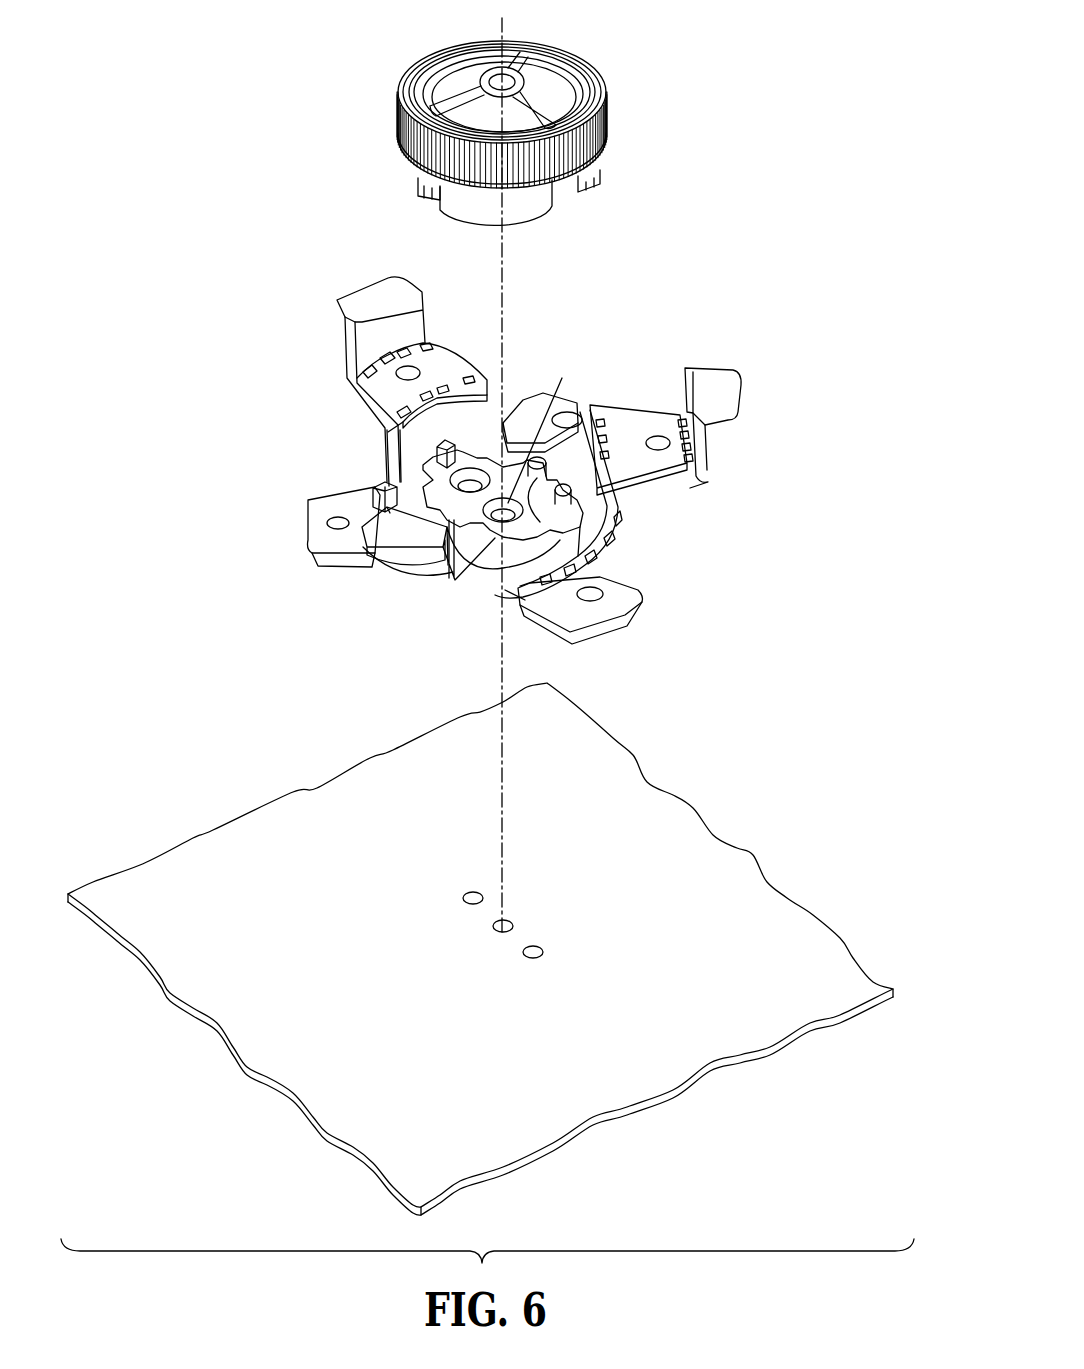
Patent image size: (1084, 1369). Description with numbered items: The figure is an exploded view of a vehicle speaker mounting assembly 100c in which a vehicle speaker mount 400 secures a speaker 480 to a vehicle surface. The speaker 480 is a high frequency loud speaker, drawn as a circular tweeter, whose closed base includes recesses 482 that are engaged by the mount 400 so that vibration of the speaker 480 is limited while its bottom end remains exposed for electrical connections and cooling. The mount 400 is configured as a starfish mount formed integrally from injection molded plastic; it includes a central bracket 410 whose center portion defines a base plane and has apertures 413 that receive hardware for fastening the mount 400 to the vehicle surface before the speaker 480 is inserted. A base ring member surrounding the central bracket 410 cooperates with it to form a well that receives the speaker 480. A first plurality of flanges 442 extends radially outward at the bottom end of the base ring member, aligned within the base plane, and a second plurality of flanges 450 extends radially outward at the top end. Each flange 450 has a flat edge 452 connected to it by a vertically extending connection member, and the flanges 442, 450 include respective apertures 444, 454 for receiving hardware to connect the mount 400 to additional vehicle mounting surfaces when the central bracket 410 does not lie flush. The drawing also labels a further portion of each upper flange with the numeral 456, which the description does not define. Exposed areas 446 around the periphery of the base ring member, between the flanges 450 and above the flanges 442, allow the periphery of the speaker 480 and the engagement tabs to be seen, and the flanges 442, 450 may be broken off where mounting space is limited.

The vehicle speaker mounting assembly 100c is at (802, 72).
The speaker 480 is at (628, 86).
The recesses 482 is at (416, 188).
The vehicle speaker mount 400 is at (286, 369).
The central bracket 410 is at (582, 525).
The apertures 413 is at (544, 430).
The first plurality of flanges 442 is at (512, 426).
The apertures 444 is at (334, 516).
The exposed areas 446 is at (585, 582).
The second plurality of flanges 450 is at (392, 392).
The flat edge 452 is at (378, 286).
The aperture 454 is at (442, 352).
The clip bases 456 is at (392, 325).